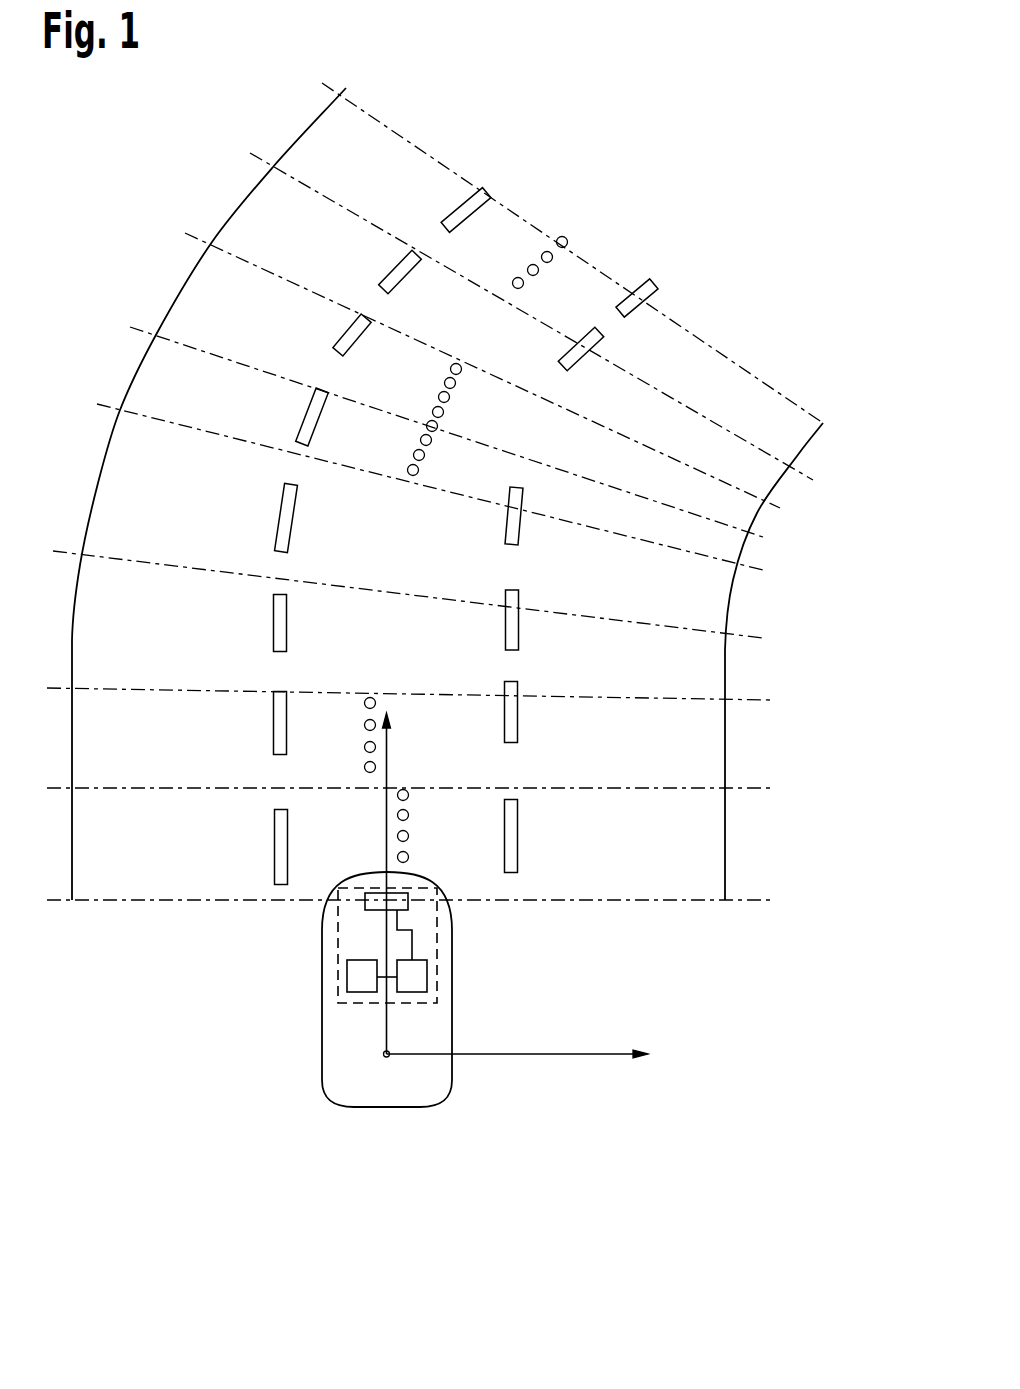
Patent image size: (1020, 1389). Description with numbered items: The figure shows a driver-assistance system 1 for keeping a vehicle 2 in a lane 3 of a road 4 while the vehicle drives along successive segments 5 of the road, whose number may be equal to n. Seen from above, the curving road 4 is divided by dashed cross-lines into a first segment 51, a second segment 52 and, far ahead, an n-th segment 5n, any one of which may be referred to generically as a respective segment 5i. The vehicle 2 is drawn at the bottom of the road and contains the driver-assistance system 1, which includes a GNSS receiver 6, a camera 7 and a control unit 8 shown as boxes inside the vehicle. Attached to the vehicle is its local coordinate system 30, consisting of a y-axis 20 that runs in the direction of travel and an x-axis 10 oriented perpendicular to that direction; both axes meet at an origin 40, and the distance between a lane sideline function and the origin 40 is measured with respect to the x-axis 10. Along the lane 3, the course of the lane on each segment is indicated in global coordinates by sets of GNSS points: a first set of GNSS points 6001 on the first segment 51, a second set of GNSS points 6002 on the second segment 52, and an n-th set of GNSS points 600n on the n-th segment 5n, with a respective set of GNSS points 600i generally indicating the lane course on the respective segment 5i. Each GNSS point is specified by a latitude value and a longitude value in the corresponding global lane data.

The driver-assistance system 1 is at (437, 948).
The vehicle 2 is at (322, 1012).
The lane 3 is at (472, 519).
The road 4 is at (668, 206).
The segments 5 is at (892, 465).
The n-th segment 5n is at (562, 295).
The respective segment 5i is at (449, 456).
The second segment 52 is at (436, 738).
The first segment 51 is at (436, 844).
The GNSS receiver 6 is at (347, 977).
The camera 7 is at (365, 902).
The control unit 8 is at (427, 977).
The x-axis 10 is at (542, 1055).
The y-axis 20 is at (386, 1023).
The local coordinate system 30 is at (448, 1140).
The origin 40 is at (386, 1057).
The n-th set of GNSS points 600n is at (562, 282).
The respective set of GNSS points 600i is at (456, 456).
The second set of GNSS points 6002 is at (327, 735).
The first set of GNSS points 6001 is at (450, 826).